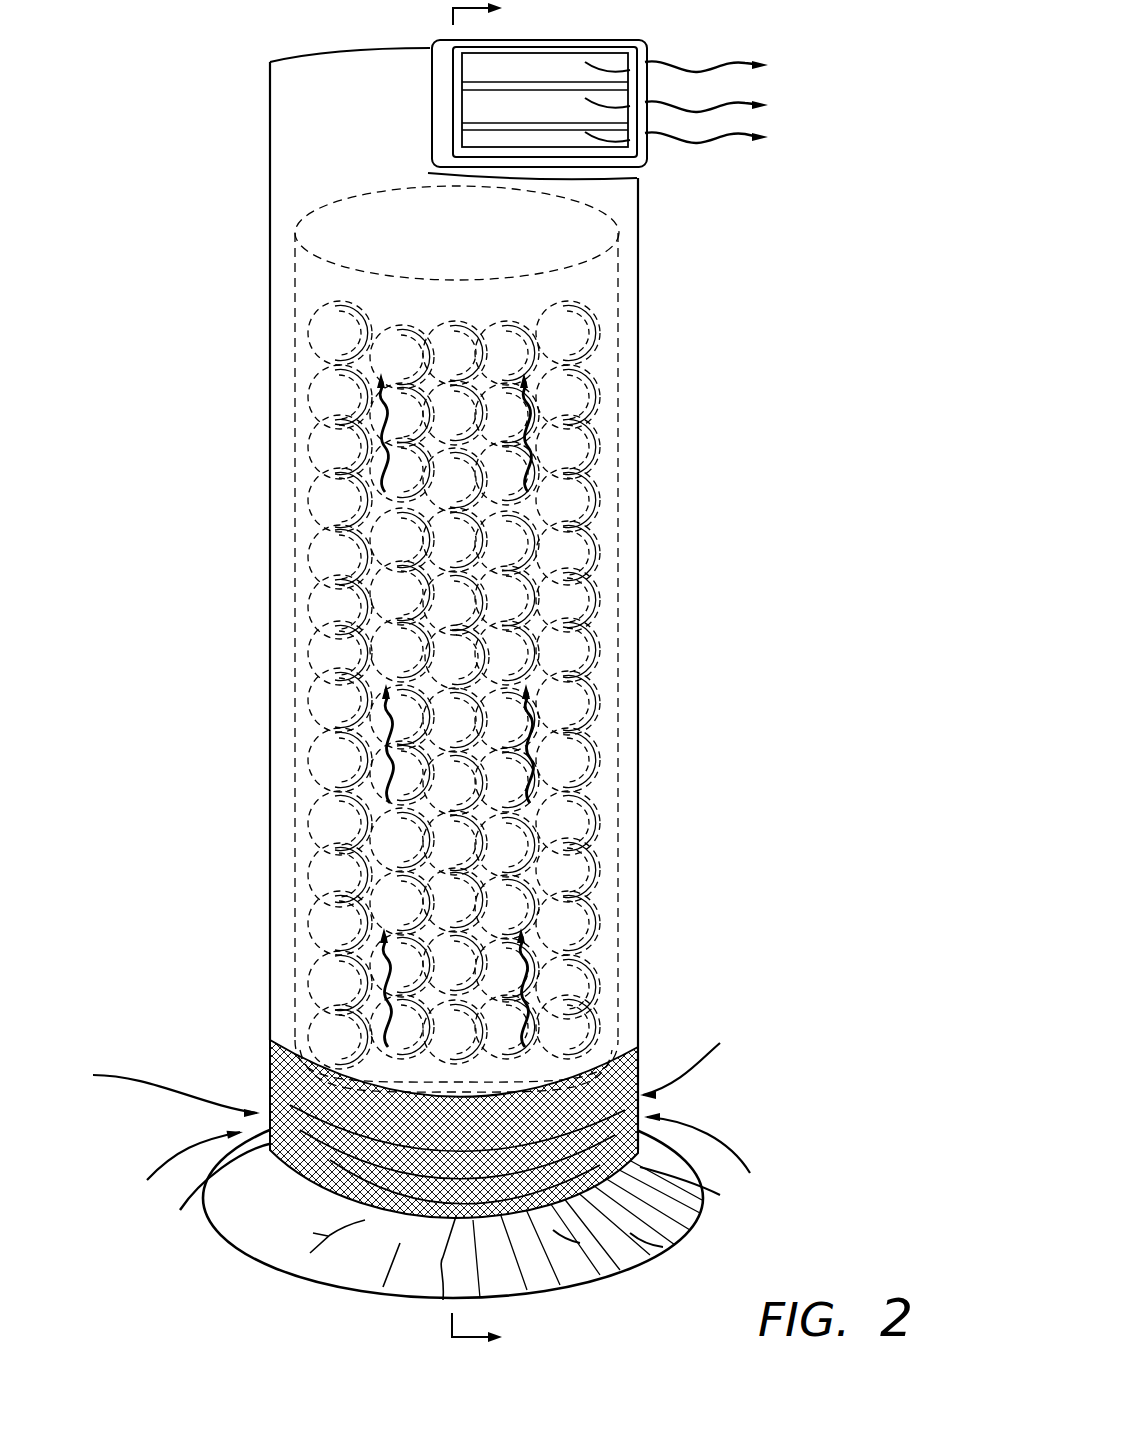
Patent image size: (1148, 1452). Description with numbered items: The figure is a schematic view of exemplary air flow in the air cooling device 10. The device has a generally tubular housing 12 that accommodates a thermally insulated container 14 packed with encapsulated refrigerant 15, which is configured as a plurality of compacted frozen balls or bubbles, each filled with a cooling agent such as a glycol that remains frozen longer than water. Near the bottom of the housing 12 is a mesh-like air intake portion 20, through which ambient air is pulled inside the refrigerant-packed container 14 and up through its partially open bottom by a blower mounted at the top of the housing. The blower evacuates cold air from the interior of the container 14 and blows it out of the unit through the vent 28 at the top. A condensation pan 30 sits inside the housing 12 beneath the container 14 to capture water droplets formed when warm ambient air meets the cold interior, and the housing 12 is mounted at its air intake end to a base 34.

The air cooling device 10 is at (175, 413).
The tubular housing 12 is at (638, 480).
The thermally insulated container 14 is at (600, 300).
The encapsulated refrigerant 15 is at (470, 657).
The mesh-like air intake portion 20 is at (267, 1087).
The vent 28 is at (540, 73).
The condensation pan 30 is at (637, 1053).
The base 34 is at (633, 1233).